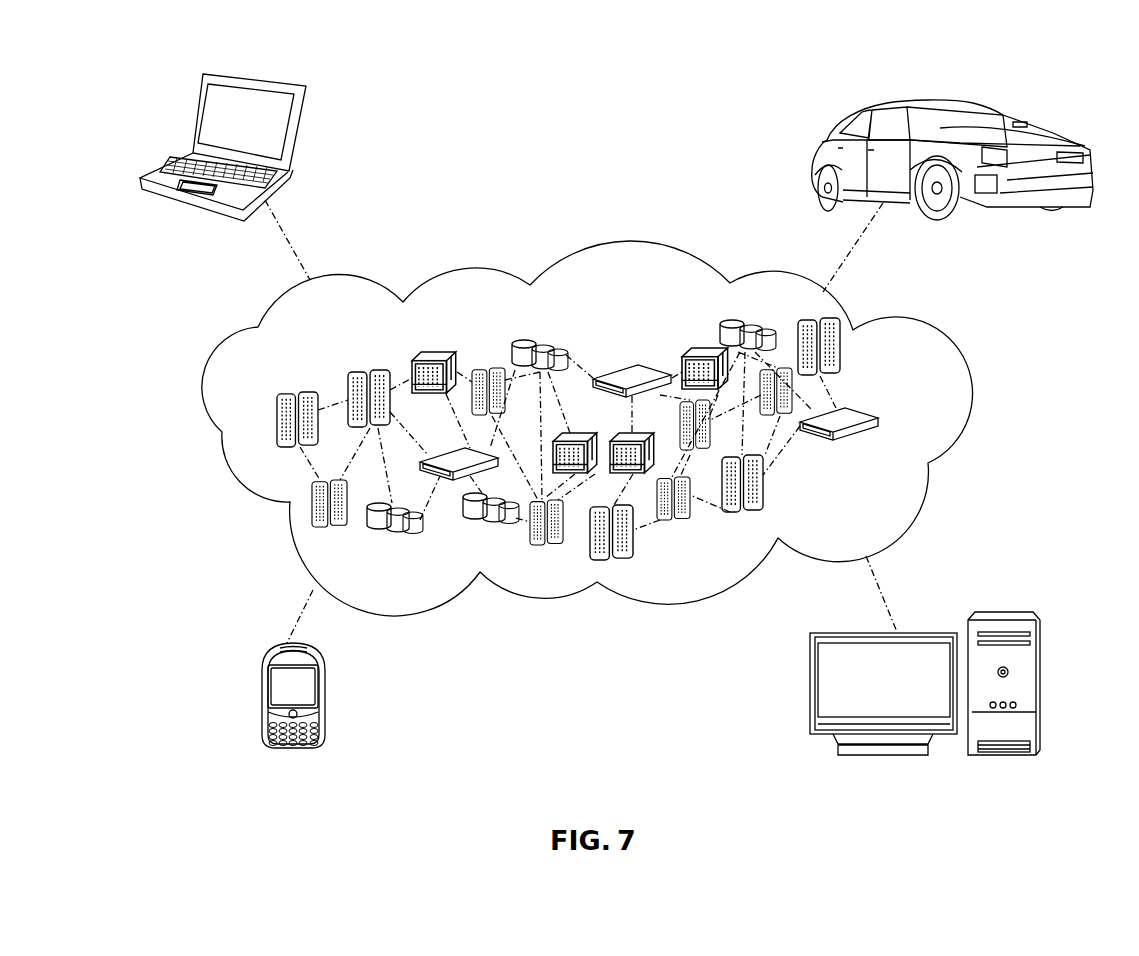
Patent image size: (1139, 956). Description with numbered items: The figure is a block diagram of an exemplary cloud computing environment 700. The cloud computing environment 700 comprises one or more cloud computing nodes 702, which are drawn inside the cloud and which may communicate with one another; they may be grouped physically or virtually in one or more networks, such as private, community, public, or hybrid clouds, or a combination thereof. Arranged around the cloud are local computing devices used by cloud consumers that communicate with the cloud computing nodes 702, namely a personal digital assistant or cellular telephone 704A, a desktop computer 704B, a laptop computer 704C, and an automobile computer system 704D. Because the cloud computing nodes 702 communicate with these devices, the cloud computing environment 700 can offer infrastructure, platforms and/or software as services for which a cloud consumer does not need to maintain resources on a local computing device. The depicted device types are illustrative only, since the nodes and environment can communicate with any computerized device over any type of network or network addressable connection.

The cloud computing environment 700 is at (931, 341).
The cloud computing nodes 702 is at (912, 418).
The personal digital assistant (PDA) or cellular telephone 704A is at (267, 698).
The desktop computer 704B is at (1007, 608).
The laptop computer 704C is at (303, 135).
The automobile computer system 704D is at (822, 145).